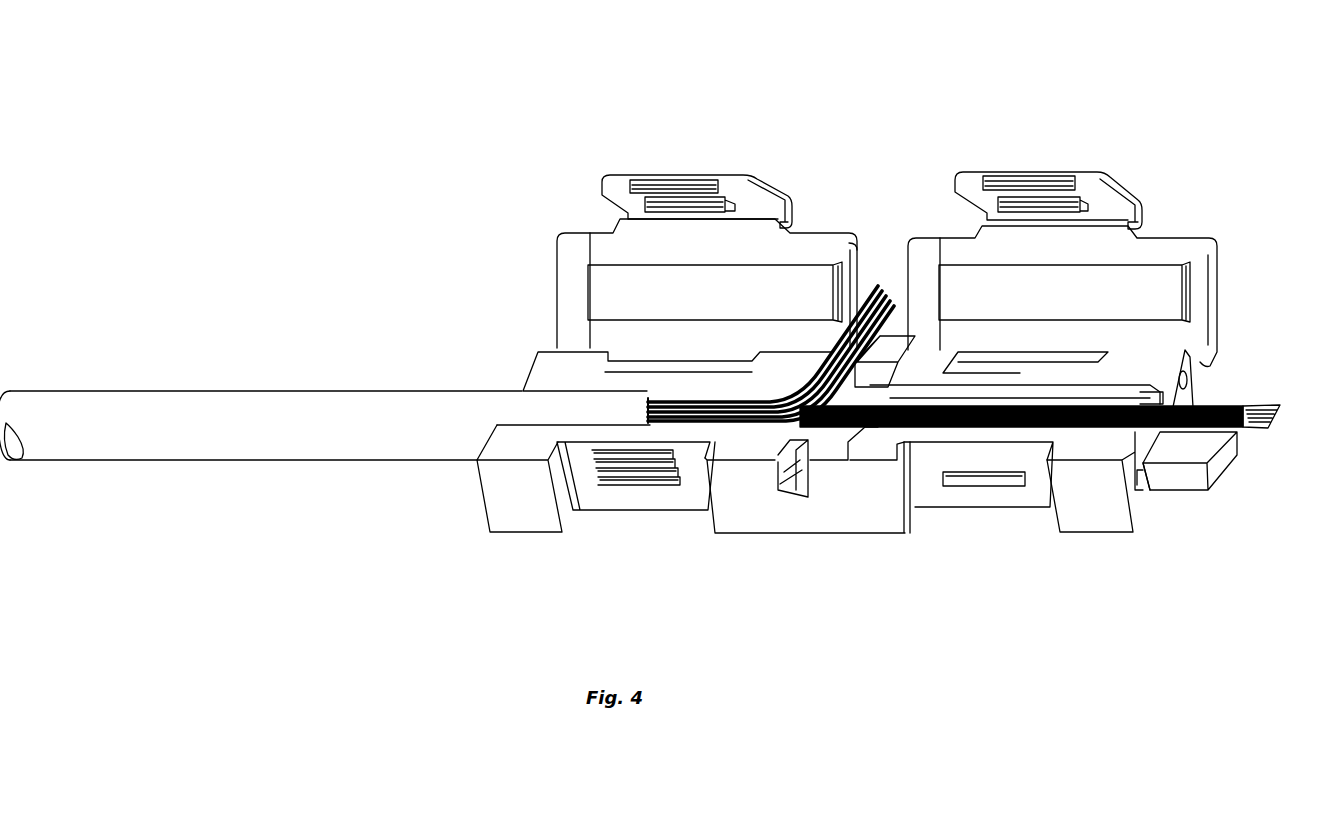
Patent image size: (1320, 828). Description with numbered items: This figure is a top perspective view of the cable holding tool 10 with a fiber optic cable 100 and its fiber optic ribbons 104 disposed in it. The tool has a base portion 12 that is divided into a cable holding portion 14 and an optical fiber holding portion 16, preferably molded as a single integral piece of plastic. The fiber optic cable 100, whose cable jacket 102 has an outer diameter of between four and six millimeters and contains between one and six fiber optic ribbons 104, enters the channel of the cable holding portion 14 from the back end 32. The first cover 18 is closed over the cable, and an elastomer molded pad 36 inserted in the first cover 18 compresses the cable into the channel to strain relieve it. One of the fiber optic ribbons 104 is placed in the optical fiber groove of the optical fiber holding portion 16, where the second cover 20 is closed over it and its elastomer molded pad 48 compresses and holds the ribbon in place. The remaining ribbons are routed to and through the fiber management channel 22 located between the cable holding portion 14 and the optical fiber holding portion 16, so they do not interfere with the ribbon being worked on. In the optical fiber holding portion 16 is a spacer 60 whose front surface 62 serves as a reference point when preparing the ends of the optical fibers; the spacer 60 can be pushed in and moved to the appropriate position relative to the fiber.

The cable holding tool 10 is at (986, 118).
The base portion 12 is at (853, 533).
The cable holding portion 14 is at (532, 364).
The optical fiber holding portion 16 is at (1195, 392).
The first cover 18 is at (567, 238).
The second cover 20 is at (1172, 237).
The fiber management channel 22 is at (781, 492).
The back end 32 is at (478, 490).
The elastomer molded pad 36 is at (596, 295).
The elastomer molded pad 48 is at (1172, 292).
The spacer 60 is at (1182, 490).
The front surface 62 is at (1222, 450).
The fiber optic cable 100 is at (261, 430).
The cable jacket 102 is at (294, 407).
The fiber optic ribbons 104 is at (893, 283).